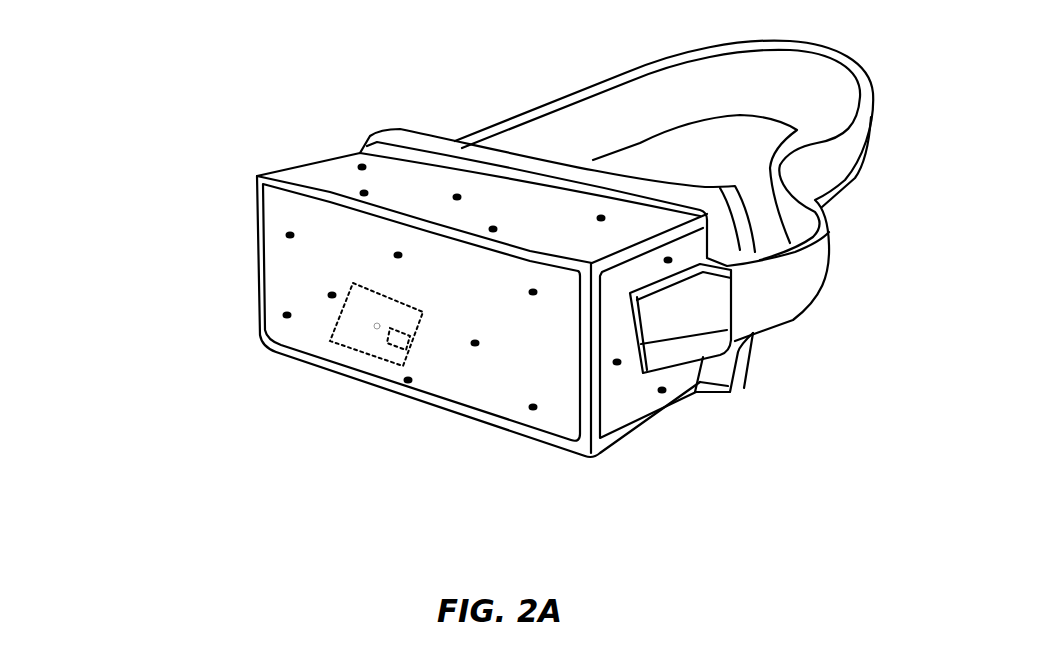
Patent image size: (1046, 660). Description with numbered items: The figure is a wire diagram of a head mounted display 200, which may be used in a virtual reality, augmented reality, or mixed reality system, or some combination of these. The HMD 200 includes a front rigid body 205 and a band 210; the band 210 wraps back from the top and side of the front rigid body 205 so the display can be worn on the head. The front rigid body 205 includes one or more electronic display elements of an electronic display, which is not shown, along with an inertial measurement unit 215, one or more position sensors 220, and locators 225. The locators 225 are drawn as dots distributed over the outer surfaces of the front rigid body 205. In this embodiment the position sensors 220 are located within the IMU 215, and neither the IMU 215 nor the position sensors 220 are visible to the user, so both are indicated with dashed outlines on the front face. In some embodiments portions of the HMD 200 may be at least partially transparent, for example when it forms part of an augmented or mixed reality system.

The head mounted display 200 is at (960, 42).
The front rigid body 205 is at (246, 176).
The band 210 is at (558, 100).
The inertial measurement unit 215 is at (330, 338).
The position sensors 220 is at (400, 337).
The locators 225 is at (286, 313).